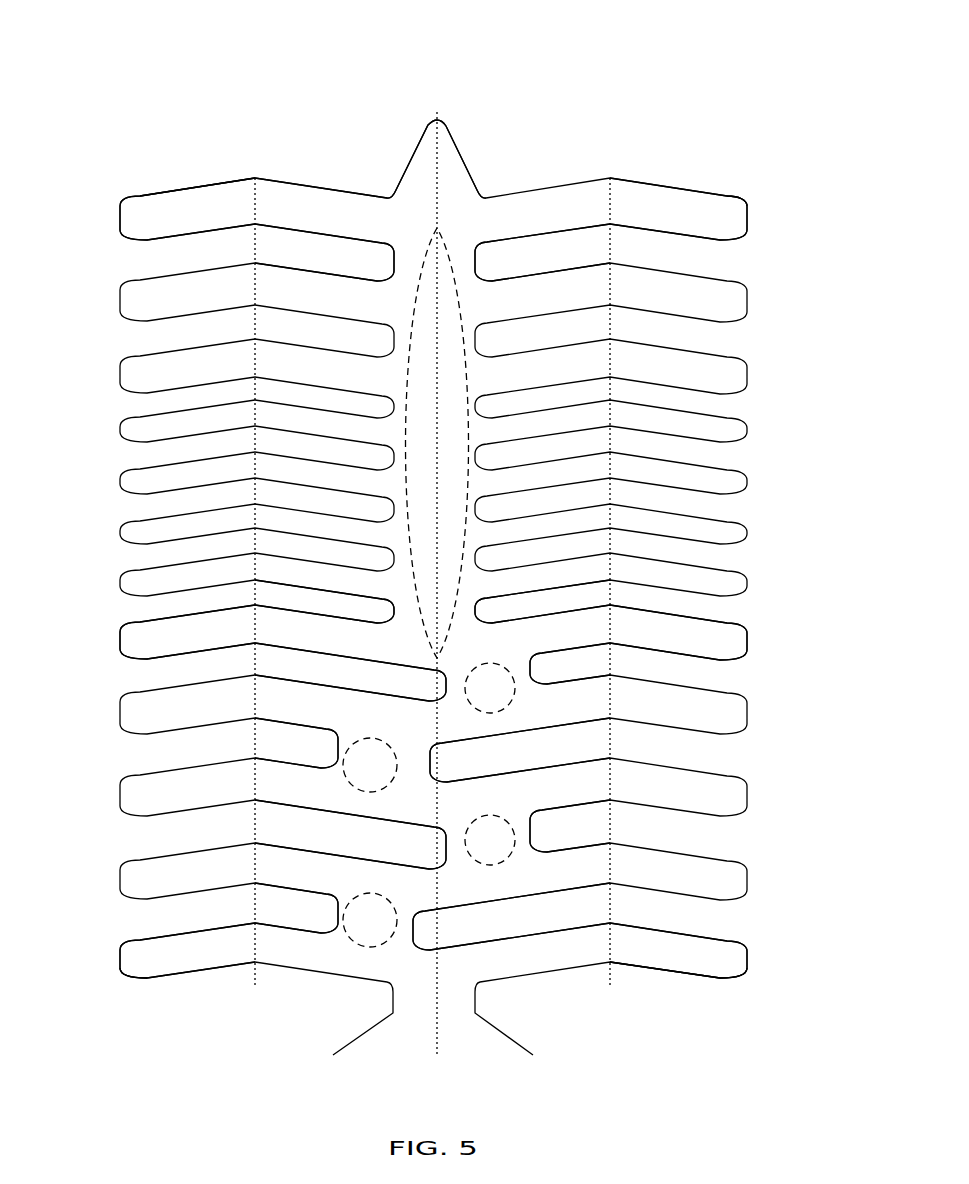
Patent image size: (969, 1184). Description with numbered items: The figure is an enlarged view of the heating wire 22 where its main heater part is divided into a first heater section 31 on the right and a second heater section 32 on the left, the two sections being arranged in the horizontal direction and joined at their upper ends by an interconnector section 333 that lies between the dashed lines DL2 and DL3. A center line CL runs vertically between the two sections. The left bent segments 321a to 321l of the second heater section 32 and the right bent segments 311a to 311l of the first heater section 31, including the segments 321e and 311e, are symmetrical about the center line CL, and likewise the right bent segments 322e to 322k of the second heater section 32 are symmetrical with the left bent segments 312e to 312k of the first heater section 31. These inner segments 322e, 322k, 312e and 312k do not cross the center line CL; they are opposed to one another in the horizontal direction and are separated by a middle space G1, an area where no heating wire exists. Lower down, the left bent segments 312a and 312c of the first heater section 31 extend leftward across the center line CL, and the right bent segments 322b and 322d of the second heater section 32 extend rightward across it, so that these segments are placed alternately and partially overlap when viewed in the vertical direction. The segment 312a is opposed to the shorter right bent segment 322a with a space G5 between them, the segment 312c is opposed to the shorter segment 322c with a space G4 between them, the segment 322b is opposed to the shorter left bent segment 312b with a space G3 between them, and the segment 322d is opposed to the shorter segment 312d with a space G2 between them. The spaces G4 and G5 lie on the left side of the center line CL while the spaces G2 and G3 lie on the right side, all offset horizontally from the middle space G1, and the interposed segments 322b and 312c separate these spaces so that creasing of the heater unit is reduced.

The heating wire 22 is at (297, 30).
The first heater section 31 is at (689, 159).
The second heater section 32 is at (194, 157).
The interconnector section 333 is at (459, 152).
The right bent segment 311l is at (710, 195).
The right bent segment 311e is at (748, 626).
The right bent segment 311a is at (745, 937).
The left bent segment 312k is at (558, 230).
The left bent segment 312e is at (548, 627).
The left bent segment 312d is at (540, 657).
The left bent segment 312c is at (520, 732).
The left bent segment 312b is at (605, 800).
The left bent segment 312a is at (498, 945).
The left bent segment 321l is at (165, 196).
The left bent segment 321e is at (155, 625).
The left bent segment 321a is at (138, 938).
The right bent segment 322k is at (305, 229).
The right bent segment 322e is at (305, 620).
The right bent segment 322d is at (384, 701).
The right bent segment 322c is at (275, 768).
The right bent segment 322b is at (373, 862).
The right bent segment 322a is at (272, 933).
The center line CL is at (437, 566).
The dashed line DL3 is at (254, 566).
The dashed line DL2 is at (610, 566).
The space G1 is at (437, 443).
The space G2 is at (490, 688).
The space G3 is at (490, 840).
The space G4 is at (370, 765).
The space G5 is at (370, 920).